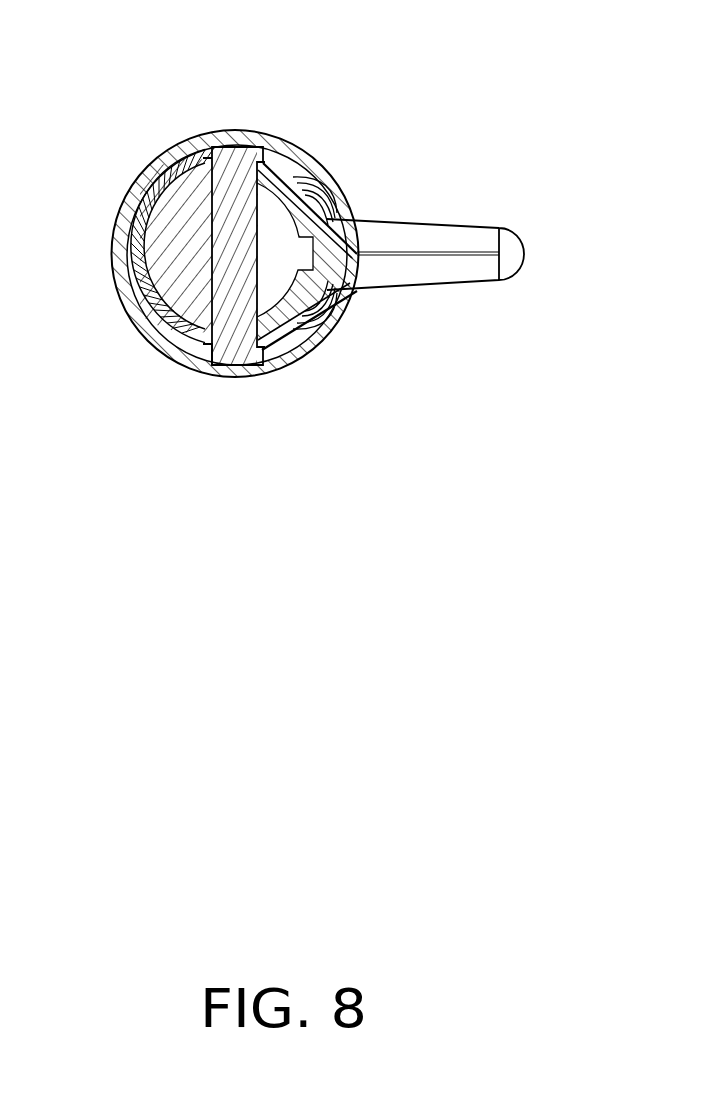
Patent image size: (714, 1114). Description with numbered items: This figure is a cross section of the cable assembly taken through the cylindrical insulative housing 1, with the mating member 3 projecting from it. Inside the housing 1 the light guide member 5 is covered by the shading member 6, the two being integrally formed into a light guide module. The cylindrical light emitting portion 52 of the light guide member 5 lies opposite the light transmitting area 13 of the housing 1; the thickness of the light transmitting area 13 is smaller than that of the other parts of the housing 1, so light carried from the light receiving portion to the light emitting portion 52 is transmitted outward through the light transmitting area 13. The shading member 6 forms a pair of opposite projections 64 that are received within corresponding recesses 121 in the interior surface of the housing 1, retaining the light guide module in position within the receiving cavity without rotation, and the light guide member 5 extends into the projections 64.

The insulative housing 1 is at (192, 152).
The mating member 3 is at (436, 270).
The light guide member 5 is at (217, 255).
The shading member 6 is at (150, 175).
The light transmitting area 13 is at (242, 372).
The light emitting portion 52 is at (232, 146).
The projections 64 is at (266, 158).
The recesses 121 is at (208, 360).